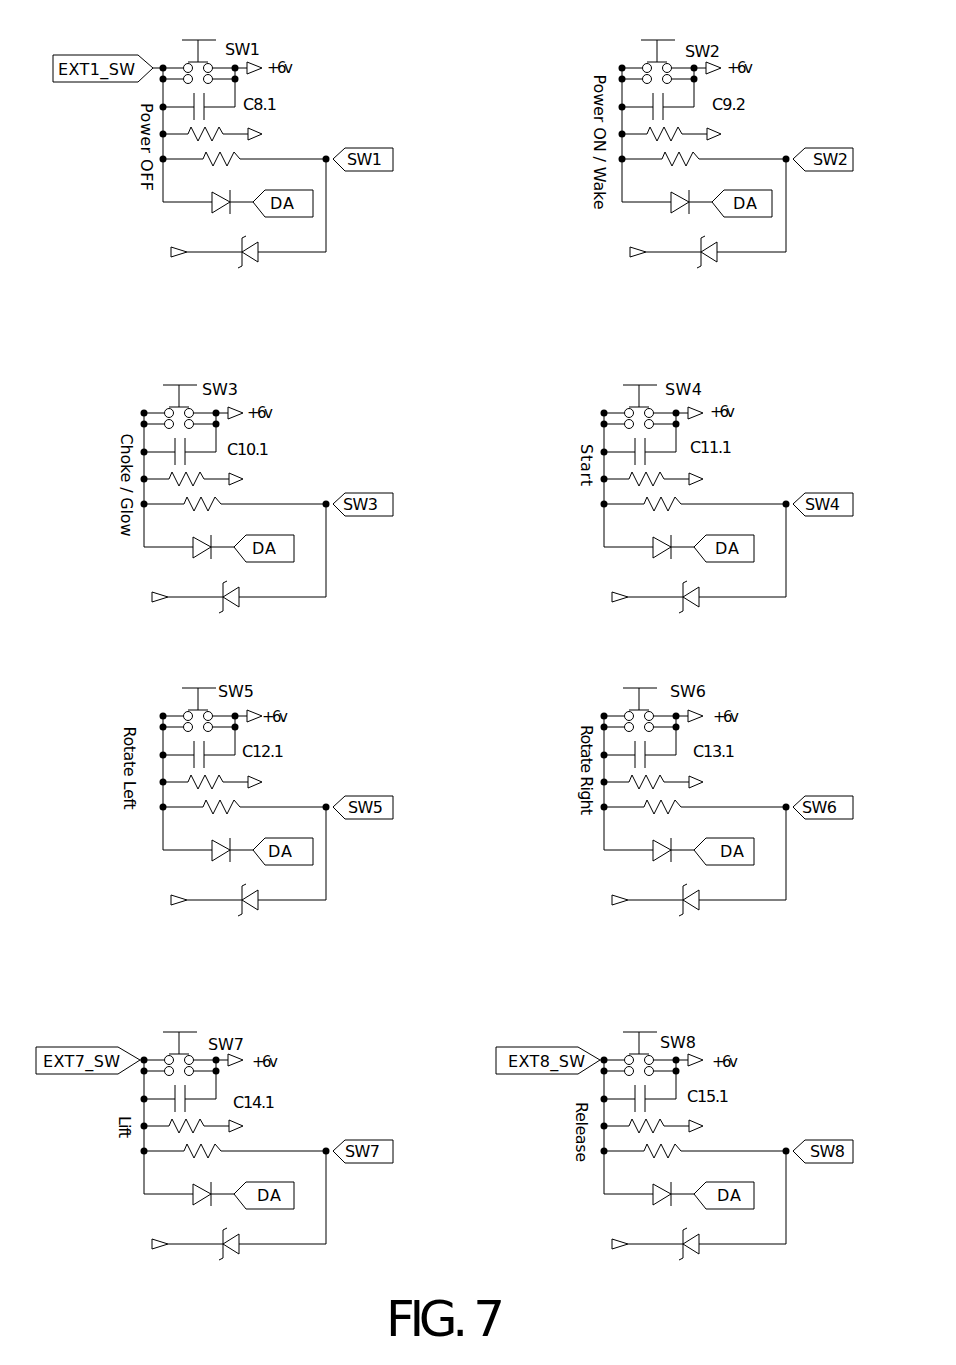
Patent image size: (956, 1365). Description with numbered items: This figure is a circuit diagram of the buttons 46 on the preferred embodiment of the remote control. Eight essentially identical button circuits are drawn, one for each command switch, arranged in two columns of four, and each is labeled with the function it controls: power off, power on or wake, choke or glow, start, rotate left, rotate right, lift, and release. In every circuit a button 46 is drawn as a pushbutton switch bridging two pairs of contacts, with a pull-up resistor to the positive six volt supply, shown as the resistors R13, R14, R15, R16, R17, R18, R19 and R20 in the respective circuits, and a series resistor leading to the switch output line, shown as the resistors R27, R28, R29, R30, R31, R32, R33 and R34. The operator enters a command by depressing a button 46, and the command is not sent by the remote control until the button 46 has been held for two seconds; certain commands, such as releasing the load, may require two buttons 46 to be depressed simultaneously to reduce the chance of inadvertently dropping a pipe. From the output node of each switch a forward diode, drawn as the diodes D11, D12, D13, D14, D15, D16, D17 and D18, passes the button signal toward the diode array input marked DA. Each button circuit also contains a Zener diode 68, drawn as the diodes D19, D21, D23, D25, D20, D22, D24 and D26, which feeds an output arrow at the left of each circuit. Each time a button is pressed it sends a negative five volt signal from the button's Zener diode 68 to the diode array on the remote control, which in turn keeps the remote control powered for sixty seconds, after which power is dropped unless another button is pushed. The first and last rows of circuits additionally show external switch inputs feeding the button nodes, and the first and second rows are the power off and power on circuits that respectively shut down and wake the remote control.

The button 46 is at (410, 529).
The Zener diode 68 is at (473, 765).
The diode D11 is at (201, 209).
The diode D12 is at (662, 210).
The diode D13 is at (183, 555).
The diode D14 is at (644, 553).
The diode D15 is at (200, 857).
The diode D16 is at (646, 857).
The diode D17 is at (186, 1205).
The diode D18 is at (648, 1205).
The diode D19 is at (298, 239).
The diode D20 is at (295, 889).
The diode D21 is at (762, 241).
The diode D22 is at (747, 889).
The diode D23 is at (280, 586).
The diode D24 is at (287, 1232).
The diode D25 is at (743, 586).
The diode D26 is at (752, 1232).
The resistor 4K7 R13 is at (261, 134).
The resistor 4K7 R14 is at (724, 134).
The resistor 4K7 R15 is at (243, 479).
The resistor 4K7 R16 is at (704, 479).
The resistor 4K7 R17 is at (261, 782).
The resistor 4K7 R18 is at (707, 782).
The resistor 4K7 R19 is at (246, 1131).
The resistor 4K7 R20 is at (709, 1131).
The resistor 1K R27 is at (204, 169).
The resistor 1K R28 is at (663, 169).
The resistor 1K R29 is at (187, 514).
The resistor 1K R30 is at (644, 514).
The resistor 1K R31 is at (205, 818).
The resistor 1K R32 is at (647, 818).
The resistor 1K R33 is at (186, 1163).
The resistor 1K R34 is at (644, 1163).